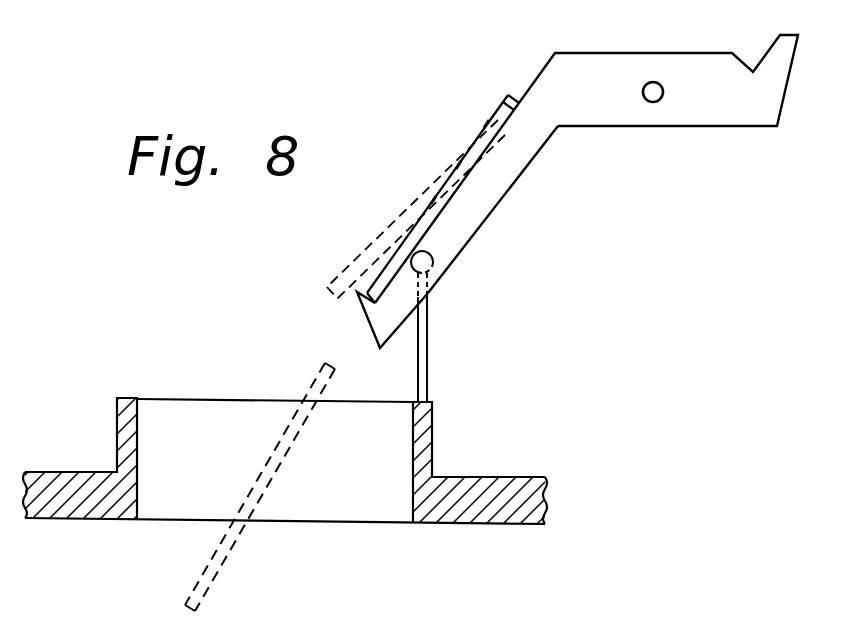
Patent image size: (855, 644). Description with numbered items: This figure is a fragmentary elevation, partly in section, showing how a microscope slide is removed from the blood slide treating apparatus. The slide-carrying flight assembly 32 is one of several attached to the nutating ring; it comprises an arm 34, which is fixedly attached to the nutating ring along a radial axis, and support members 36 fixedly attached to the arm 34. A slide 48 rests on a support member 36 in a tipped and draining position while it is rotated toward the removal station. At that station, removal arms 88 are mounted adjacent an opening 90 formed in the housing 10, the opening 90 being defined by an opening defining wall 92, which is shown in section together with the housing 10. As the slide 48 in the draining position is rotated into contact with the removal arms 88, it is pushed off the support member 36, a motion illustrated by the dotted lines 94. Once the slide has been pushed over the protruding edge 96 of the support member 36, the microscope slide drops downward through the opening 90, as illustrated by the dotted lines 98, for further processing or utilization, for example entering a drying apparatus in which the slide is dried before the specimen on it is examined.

The housing 10 is at (520, 525).
The flight assembly 32 is at (505, 198).
The arm 34 is at (665, 92).
The support member 36 is at (540, 147).
The slide 48 is at (512, 98).
The removal arms 88 is at (430, 343).
The opening 90 is at (368, 507).
The opening defining wall 92 is at (172, 399).
The dotted lines 94 is at (382, 232).
The protruding edge 96 is at (356, 295).
The dotted lines 98 is at (317, 376).